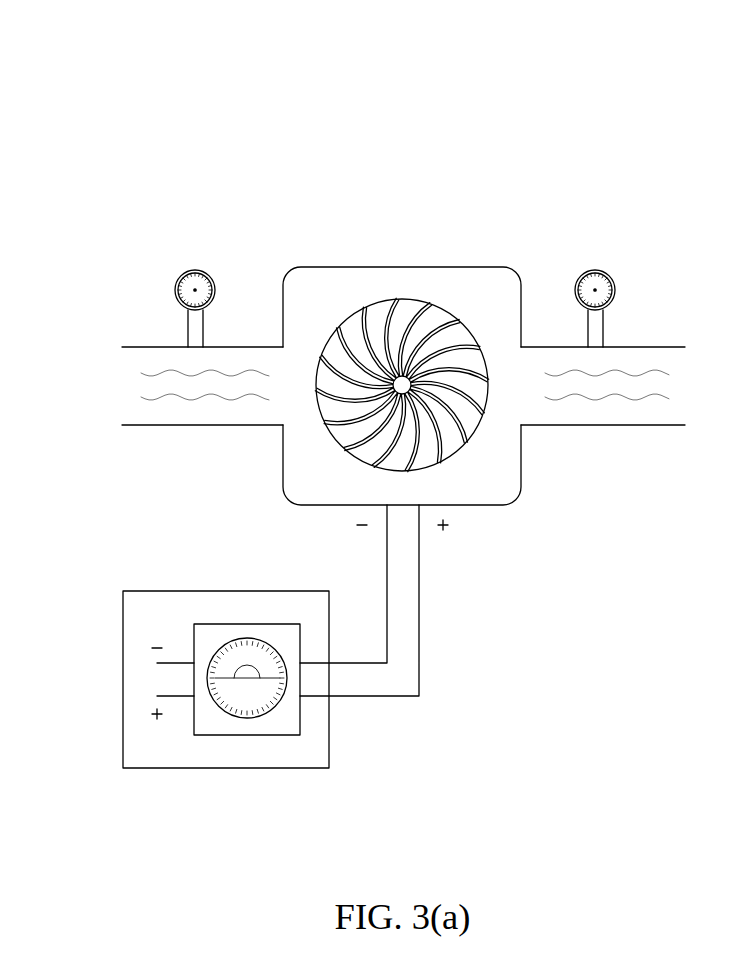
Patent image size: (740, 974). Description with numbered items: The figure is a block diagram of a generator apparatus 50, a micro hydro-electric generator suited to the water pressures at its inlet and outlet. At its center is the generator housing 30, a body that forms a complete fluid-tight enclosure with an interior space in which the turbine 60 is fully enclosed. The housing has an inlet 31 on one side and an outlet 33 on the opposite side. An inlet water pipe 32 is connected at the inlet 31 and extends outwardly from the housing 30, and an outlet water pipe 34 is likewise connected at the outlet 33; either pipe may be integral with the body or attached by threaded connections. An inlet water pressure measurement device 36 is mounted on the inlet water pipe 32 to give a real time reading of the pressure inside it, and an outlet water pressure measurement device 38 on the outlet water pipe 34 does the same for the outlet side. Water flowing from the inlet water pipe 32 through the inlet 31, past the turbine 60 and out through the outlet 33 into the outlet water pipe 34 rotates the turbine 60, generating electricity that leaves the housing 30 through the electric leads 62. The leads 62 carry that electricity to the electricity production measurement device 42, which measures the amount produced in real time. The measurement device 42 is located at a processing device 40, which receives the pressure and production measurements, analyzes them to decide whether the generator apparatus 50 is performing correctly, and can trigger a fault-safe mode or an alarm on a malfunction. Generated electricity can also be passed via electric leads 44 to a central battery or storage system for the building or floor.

The generator apparatus 50 is at (95, 51).
The generator housing 30 is at (465, 266).
The inlet port 31 is at (288, 394).
The inlet water pipe 32 is at (204, 438).
The outlet port 33 is at (519, 392).
The outlet water pipe 34 is at (605, 438).
The inlet water pressure measurement device 36 is at (194, 258).
The outlet water pressure measurement device 38 is at (594, 258).
The turbine 60 is at (400, 290).
The electric leads 62 is at (404, 708).
The processing device 40 is at (122, 604).
The electricity production measurement device 42 is at (249, 747).
The electric leads 44 is at (157, 696).